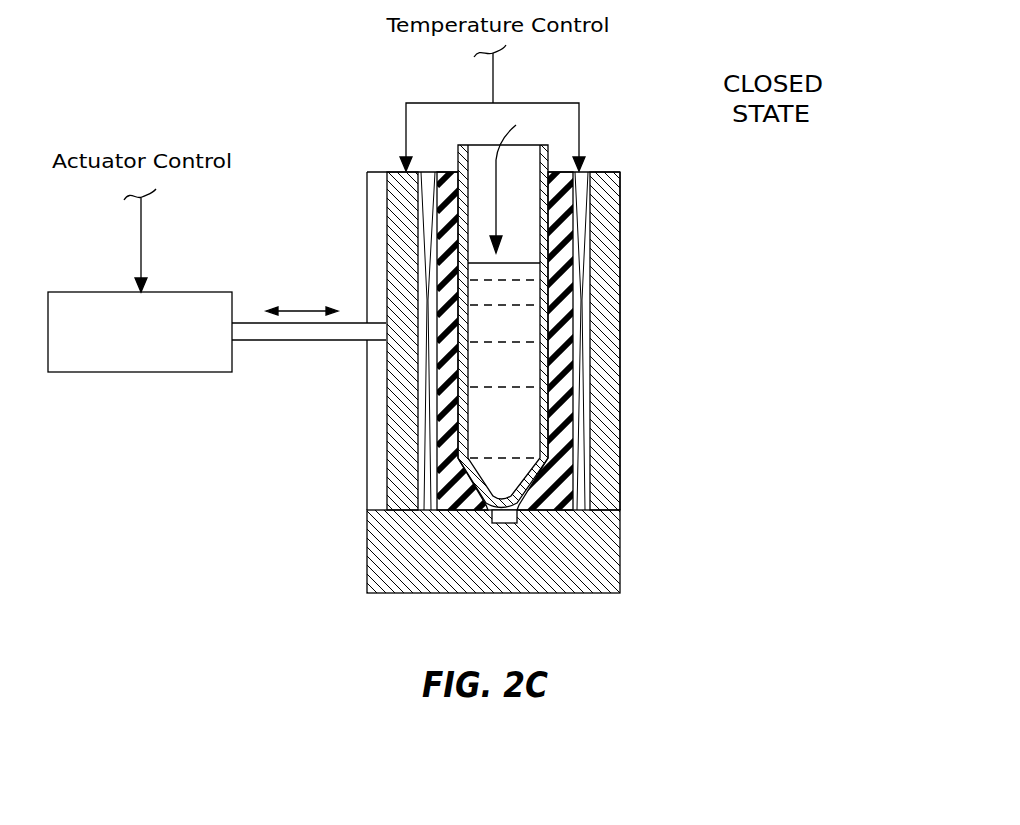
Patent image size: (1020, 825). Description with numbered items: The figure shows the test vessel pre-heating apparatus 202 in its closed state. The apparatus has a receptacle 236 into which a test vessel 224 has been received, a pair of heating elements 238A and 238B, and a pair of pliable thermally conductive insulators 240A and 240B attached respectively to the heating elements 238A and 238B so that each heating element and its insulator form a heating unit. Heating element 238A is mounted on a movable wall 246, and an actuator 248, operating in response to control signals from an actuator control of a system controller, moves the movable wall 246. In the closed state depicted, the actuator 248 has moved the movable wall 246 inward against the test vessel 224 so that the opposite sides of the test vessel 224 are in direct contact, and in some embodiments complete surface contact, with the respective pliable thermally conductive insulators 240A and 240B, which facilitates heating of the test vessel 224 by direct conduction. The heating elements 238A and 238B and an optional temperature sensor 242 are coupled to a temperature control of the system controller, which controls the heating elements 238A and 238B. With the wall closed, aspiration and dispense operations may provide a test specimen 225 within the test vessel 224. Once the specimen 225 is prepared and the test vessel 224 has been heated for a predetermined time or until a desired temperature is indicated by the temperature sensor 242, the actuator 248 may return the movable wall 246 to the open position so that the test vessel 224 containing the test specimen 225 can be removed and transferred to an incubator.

The test vessel pre-heating apparatus 202 is at (534, 328).
The test vessel 224 is at (484, 145).
The test specimen 225 is at (525, 183).
The receptacle 236 is at (545, 418).
The heating element 238A is at (388, 430).
The heating element 238B is at (595, 298).
The pliable thermally conductive insulator 240A is at (433, 382).
The pliable thermally conductive insulator 240B is at (575, 363).
The temperature sensor 242 is at (517, 518).
The movable wall 246 is at (386, 226).
The actuator 248 is at (125, 372).